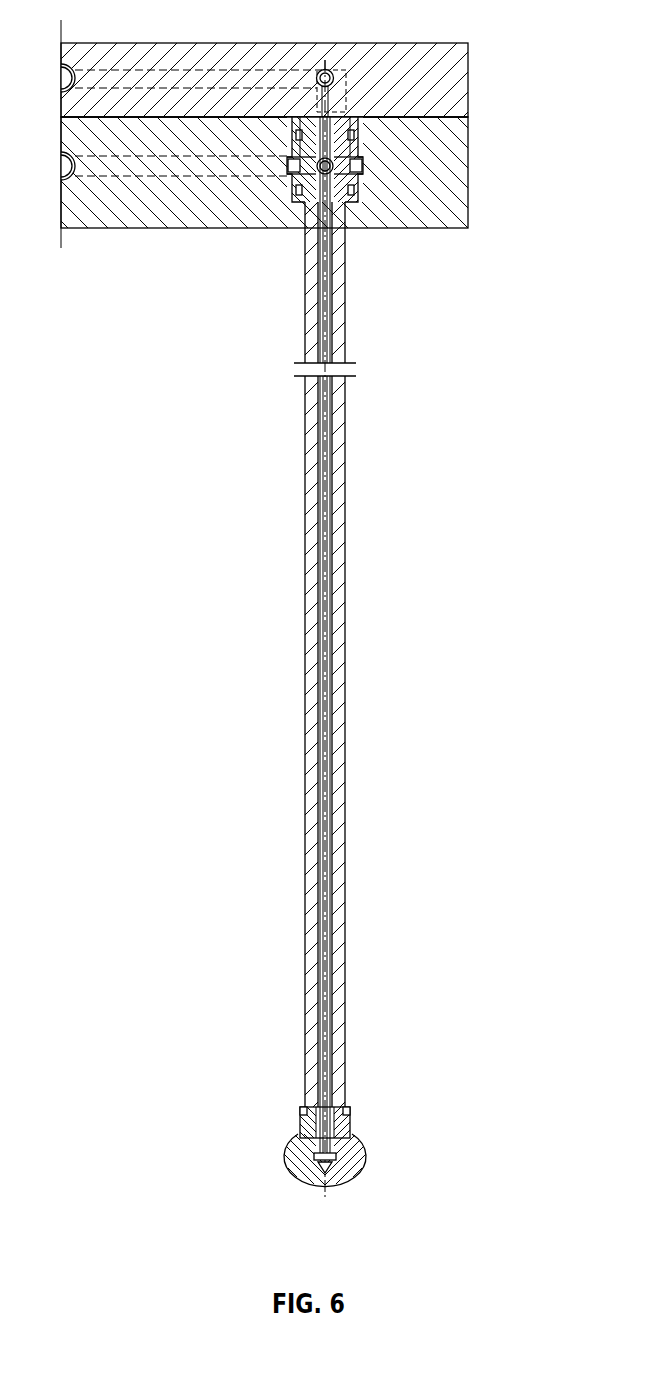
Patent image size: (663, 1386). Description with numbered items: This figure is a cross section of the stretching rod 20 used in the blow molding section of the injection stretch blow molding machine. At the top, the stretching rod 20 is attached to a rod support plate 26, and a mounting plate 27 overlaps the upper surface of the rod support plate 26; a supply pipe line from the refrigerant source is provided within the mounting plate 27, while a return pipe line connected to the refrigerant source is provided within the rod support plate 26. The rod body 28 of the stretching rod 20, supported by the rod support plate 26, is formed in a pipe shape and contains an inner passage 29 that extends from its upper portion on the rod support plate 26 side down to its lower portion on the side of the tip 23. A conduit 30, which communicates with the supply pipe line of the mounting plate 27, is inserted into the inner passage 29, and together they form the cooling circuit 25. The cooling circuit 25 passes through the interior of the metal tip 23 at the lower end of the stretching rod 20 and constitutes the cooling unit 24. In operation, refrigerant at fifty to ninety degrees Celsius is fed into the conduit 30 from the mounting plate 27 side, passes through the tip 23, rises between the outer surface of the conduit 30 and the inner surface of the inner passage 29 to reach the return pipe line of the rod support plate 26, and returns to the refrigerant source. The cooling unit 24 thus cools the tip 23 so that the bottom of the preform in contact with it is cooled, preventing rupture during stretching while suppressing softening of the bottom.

The stretching rod 20 is at (352, 773).
The tip 23 is at (292, 1167).
The cooling unit 24 is at (310, 1140).
The cooling circuit 25 is at (323, 1021).
The rod support plate 26 is at (468, 177).
The mounting plate 27 is at (468, 78).
The rod body 28 is at (305, 643).
The inner passage 29 is at (320, 582).
The conduit 30 is at (323, 525).